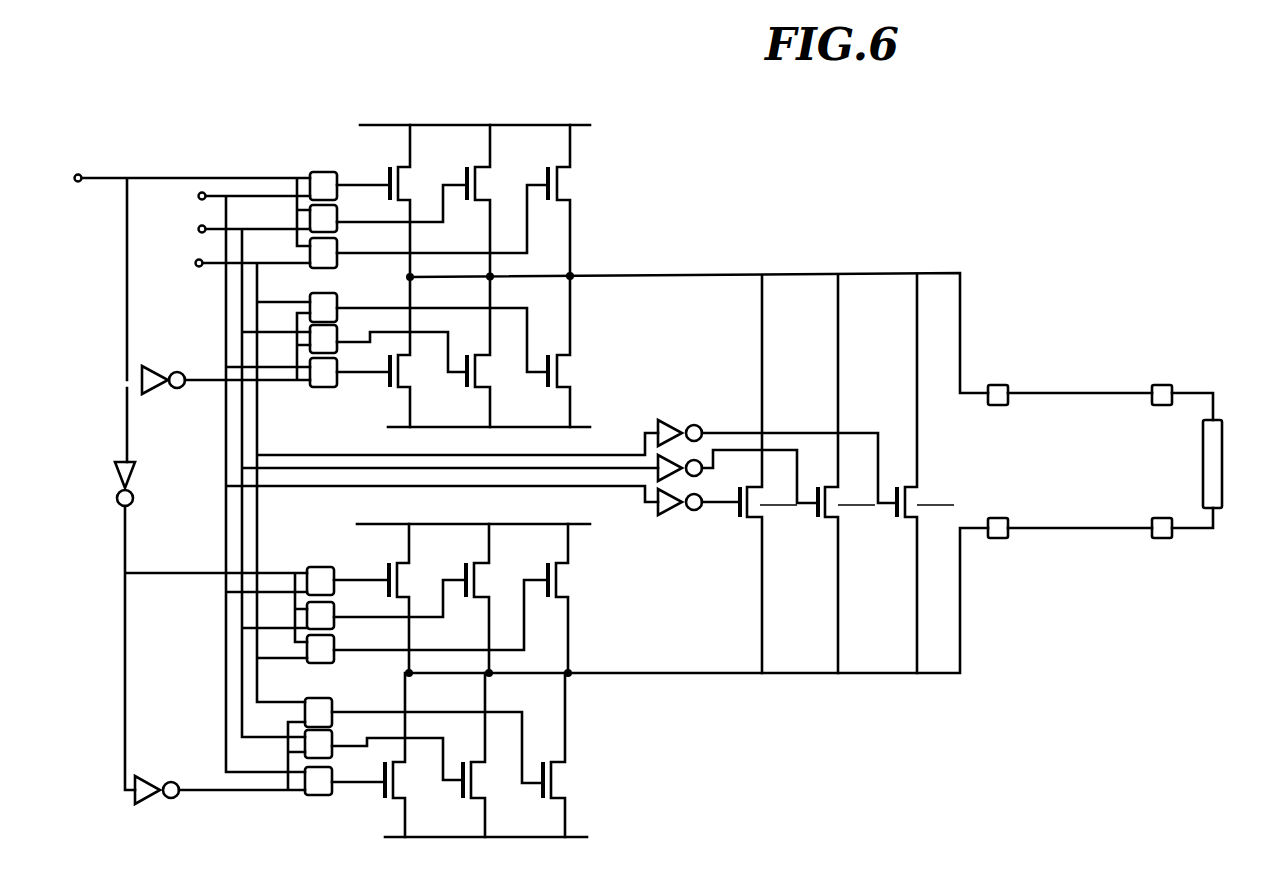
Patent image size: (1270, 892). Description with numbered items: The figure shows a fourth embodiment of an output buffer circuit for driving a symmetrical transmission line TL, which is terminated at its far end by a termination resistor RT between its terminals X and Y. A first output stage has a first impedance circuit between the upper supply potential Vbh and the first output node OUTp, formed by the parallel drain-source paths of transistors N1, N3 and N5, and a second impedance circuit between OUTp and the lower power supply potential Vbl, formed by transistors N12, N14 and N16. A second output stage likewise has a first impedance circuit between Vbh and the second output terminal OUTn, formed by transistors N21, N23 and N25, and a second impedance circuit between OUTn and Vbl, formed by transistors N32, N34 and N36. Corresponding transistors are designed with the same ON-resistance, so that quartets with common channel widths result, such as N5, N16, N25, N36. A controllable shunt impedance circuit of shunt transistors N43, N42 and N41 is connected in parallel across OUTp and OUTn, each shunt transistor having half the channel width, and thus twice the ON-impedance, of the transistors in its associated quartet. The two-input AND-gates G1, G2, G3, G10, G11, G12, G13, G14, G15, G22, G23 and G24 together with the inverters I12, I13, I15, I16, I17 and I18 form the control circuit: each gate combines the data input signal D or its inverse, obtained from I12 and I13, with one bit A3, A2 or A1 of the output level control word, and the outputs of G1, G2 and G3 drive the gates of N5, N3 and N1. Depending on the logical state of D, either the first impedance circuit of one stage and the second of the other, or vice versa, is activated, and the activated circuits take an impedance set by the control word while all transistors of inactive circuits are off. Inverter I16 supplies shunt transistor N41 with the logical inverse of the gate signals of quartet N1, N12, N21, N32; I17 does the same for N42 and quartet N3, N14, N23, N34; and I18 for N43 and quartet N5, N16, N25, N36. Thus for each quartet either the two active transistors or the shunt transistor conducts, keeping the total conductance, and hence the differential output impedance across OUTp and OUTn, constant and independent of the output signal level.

The data input signal D is at (193, 307).
The bit A3 of the output level control word A3 is at (406, 478).
The bit A2 of the output level control word A2 is at (406, 477).
The bit A1 of the output level control word A1 is at (406, 476).
The AND-gate G1 is at (348, 166).
The AND-gate G2 is at (347, 212).
The AND-gate G3 is at (347, 244).
The AND-gate G10 is at (347, 288).
The AND-gate G11 is at (348, 348).
The AND-gate G12 is at (320, 388).
The AND-gate G13 is at (335, 557).
The AND-gate G14 is at (344, 608).
The AND-gate G15 is at (344, 642).
The AND-gate G22 is at (335, 691).
The AND-gate G23 is at (342, 766).
The AND-gate G24 is at (336, 807).
The inverter I12 is at (169, 364).
The inverter I13 is at (138, 472).
The inverter I15 is at (166, 776).
The inverter I16 is at (670, 419).
The inverter I17 is at (655, 481).
The inverter I18 is at (675, 514).
The transistor N5 is at (406, 201).
The transistor N3 is at (484, 201).
The transistor N1 is at (566, 201).
The transistor N16 is at (397, 352).
The transistor N14 is at (475, 352).
The transistor N12 is at (556, 352).
The transistor N25 is at (396, 598).
The transistor N23 is at (475, 598).
The transistor N21 is at (557, 598).
The transistor N36 is at (393, 755).
The transistor N34 is at (471, 755).
The transistor N32 is at (551, 755).
The shunt transistor N43 is at (755, 475).
The shunt transistor N42 is at (830, 474).
The shunt transistor N41 is at (911, 473).
The upper power supply potential Vbh is at (473, 310).
The lower power supply potential Vbl is at (487, 647).
The first output node OUTp is at (998, 385).
The second output terminal OUTn is at (998, 538).
The transmission line terminal X is at (1182, 391).
The transmission line terminal Y is at (1182, 534).
The symmetrical transmission line TL is at (1128, 395).
The termination resistor RT is at (1229, 464).